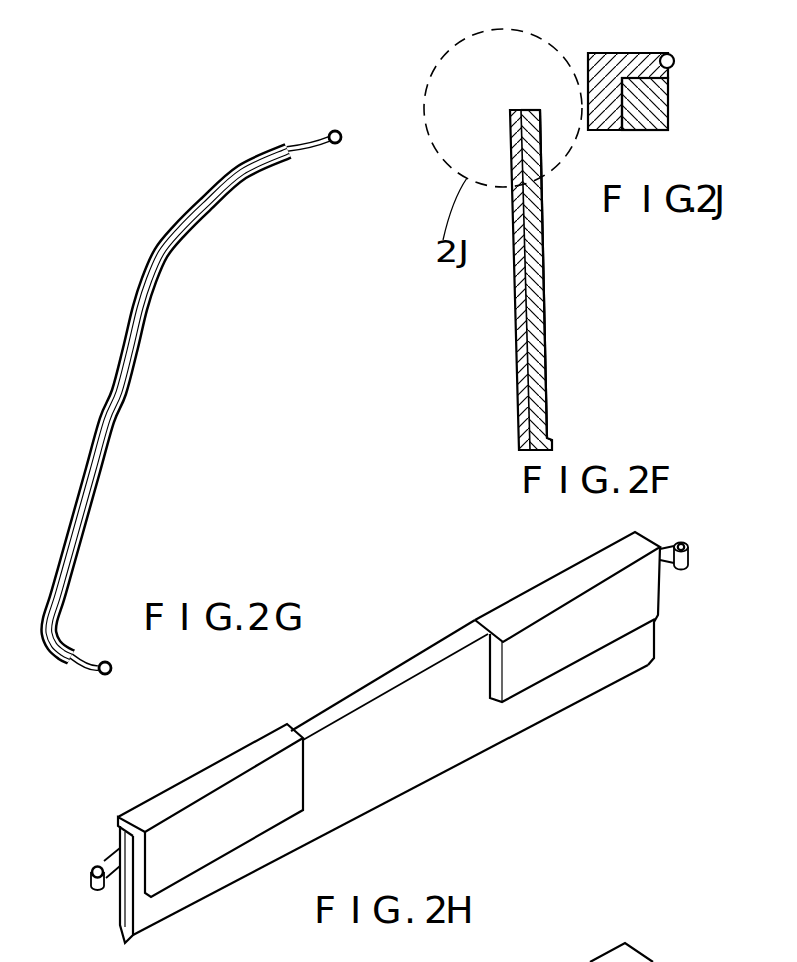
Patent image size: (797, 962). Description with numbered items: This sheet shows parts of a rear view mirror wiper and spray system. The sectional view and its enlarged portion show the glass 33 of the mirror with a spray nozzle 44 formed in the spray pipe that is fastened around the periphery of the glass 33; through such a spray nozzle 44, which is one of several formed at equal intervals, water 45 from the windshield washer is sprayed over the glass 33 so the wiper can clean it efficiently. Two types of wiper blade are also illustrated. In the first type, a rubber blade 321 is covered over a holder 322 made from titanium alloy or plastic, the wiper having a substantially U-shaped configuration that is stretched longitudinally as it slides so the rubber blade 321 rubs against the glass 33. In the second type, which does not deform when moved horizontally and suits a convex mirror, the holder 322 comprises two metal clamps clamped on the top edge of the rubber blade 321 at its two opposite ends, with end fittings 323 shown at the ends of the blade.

In FIG. 2F, the glass 33 is at (545, 412).
In FIG. 2F, the spray nozzle 44 is at (541, 114).
In FIG. 2J, the spray nozzle 44 is at (673, 62).
In FIG. 2J, the water 45 is at (669, 85).
In FIG. 2G, the rubber blade 321 is at (133, 353).
In FIG. 2G, the holder 322 is at (134, 323).
In FIG. 2H, the holder 322 is at (608, 567).
In FIG. 2G, the end eyelet 323 is at (95, 678).
In FIG. 2H, the end eyelet 323 is at (684, 540).